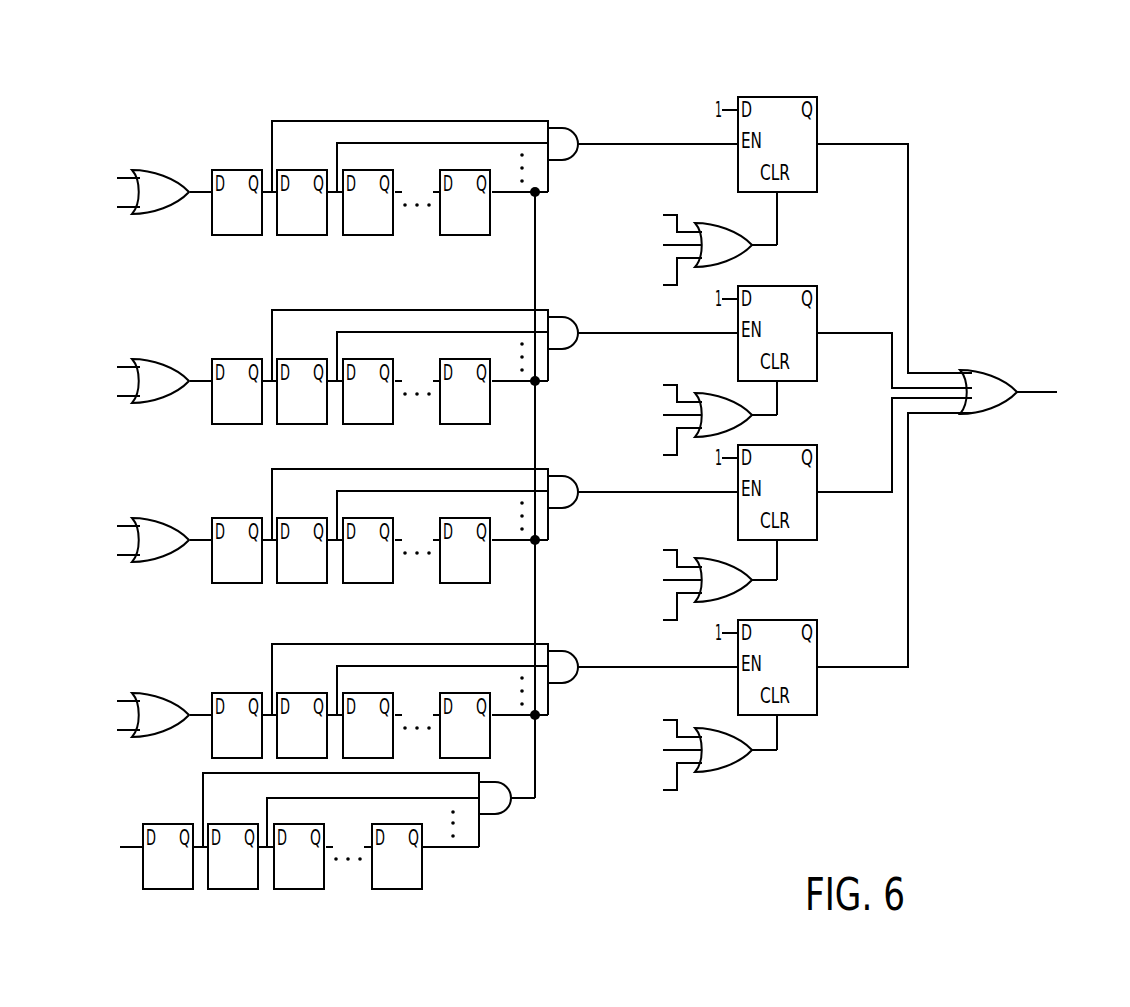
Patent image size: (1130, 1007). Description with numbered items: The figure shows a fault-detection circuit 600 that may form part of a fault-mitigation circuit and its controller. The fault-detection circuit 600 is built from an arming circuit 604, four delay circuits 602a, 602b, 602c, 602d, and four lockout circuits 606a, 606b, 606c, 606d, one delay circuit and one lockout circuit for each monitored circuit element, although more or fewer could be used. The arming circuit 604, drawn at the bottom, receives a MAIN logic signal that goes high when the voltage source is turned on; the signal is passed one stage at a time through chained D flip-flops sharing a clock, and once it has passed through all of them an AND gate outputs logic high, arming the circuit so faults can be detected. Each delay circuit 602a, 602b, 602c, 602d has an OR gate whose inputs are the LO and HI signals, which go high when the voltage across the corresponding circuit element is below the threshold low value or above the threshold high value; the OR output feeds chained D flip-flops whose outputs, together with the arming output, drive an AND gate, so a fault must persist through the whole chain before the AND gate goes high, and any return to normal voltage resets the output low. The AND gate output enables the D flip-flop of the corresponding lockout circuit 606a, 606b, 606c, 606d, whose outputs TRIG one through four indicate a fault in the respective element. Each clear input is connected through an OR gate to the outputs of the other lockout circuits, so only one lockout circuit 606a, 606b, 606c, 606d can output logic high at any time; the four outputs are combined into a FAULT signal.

The fault-detection circuit 600 is at (1049, 147).
The delay circuit 602a is at (199, 152).
The delay circuit 602b is at (199, 327).
The delay circuit 602c is at (204, 502).
The delay circuit 602d is at (211, 661).
The arming circuit 604 is at (141, 816).
The lockout circuit 606a is at (824, 184).
The lockout circuit 606b is at (824, 373).
The lockout circuit 606c is at (824, 532).
The lockout circuit 606d is at (831, 708).